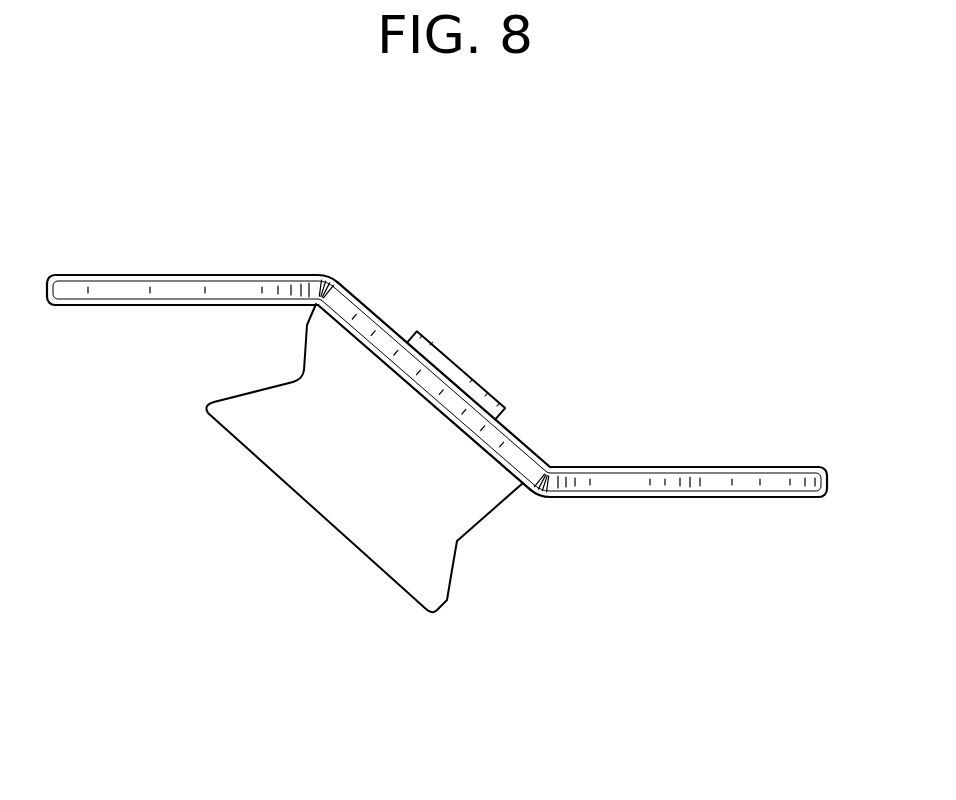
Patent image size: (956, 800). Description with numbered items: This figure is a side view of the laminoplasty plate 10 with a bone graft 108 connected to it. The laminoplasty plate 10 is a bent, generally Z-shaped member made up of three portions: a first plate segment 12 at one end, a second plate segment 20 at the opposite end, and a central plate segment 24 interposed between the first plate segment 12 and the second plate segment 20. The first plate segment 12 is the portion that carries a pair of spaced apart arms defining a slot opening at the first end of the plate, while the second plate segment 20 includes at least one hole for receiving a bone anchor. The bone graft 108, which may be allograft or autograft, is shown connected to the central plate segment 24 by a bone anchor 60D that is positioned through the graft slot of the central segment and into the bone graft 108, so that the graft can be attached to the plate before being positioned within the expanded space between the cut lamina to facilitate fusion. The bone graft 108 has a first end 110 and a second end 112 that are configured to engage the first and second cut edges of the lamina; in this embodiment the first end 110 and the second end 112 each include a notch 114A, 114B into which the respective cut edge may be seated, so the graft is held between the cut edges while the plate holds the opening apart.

The laminoplasty plate 10 is at (437, 433).
The first plate segment 12 is at (230, 274).
The second plate segment 20 is at (702, 466).
The central plate segment 24 is at (362, 302).
The bone anchor 60D is at (442, 352).
The bone graft 108 is at (485, 502).
The first end 110 is at (350, 473).
The second end 112 is at (451, 593).
The notch 114A is at (291, 381).
The notch 114B is at (461, 548).